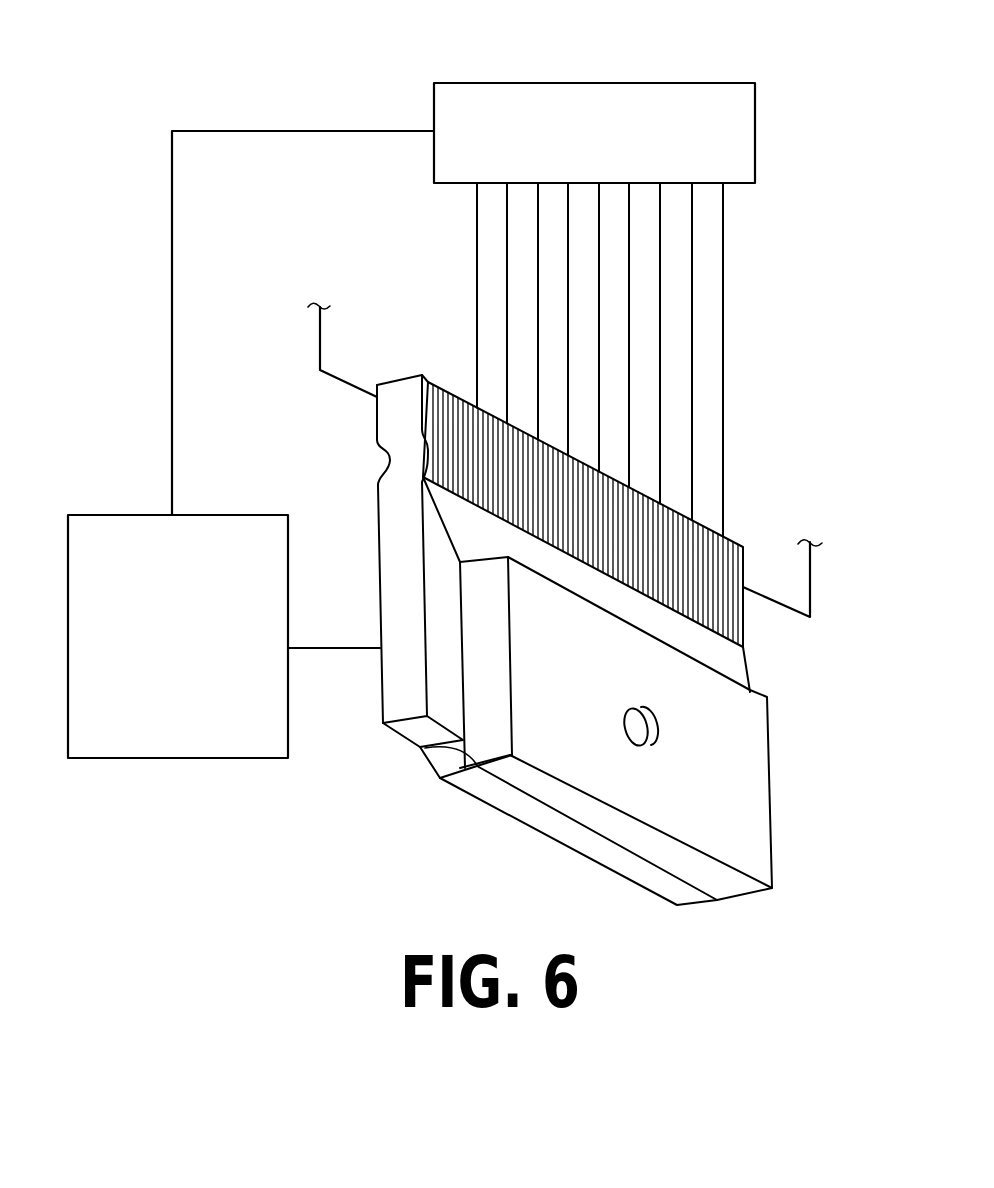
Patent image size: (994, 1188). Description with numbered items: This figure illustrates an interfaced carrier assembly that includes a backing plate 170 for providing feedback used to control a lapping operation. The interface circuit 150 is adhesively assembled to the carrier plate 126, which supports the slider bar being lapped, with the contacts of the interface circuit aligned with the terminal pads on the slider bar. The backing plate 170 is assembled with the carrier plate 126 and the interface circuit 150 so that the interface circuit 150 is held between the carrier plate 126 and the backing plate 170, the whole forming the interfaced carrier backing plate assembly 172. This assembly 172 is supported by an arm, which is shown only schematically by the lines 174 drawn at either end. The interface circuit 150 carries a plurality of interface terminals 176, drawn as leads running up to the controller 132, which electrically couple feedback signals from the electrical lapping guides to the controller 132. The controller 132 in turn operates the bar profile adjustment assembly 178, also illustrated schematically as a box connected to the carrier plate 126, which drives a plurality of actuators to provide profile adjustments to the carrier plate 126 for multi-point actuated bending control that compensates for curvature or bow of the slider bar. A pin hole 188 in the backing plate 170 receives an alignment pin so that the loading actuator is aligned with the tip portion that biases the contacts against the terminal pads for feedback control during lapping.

The controller 132 is at (631, 84).
The bar profile adjustment assembly 178 is at (101, 517).
The carrier plate 126 is at (375, 507).
The interfaced carrier backing plate assembly 172 is at (706, 523).
The interface terminals 176 is at (522, 473).
The lines 174 is at (320, 333).
The backing plate 170 is at (590, 676).
The interface circuit 150 is at (432, 755).
The pin hole 188 is at (655, 717).